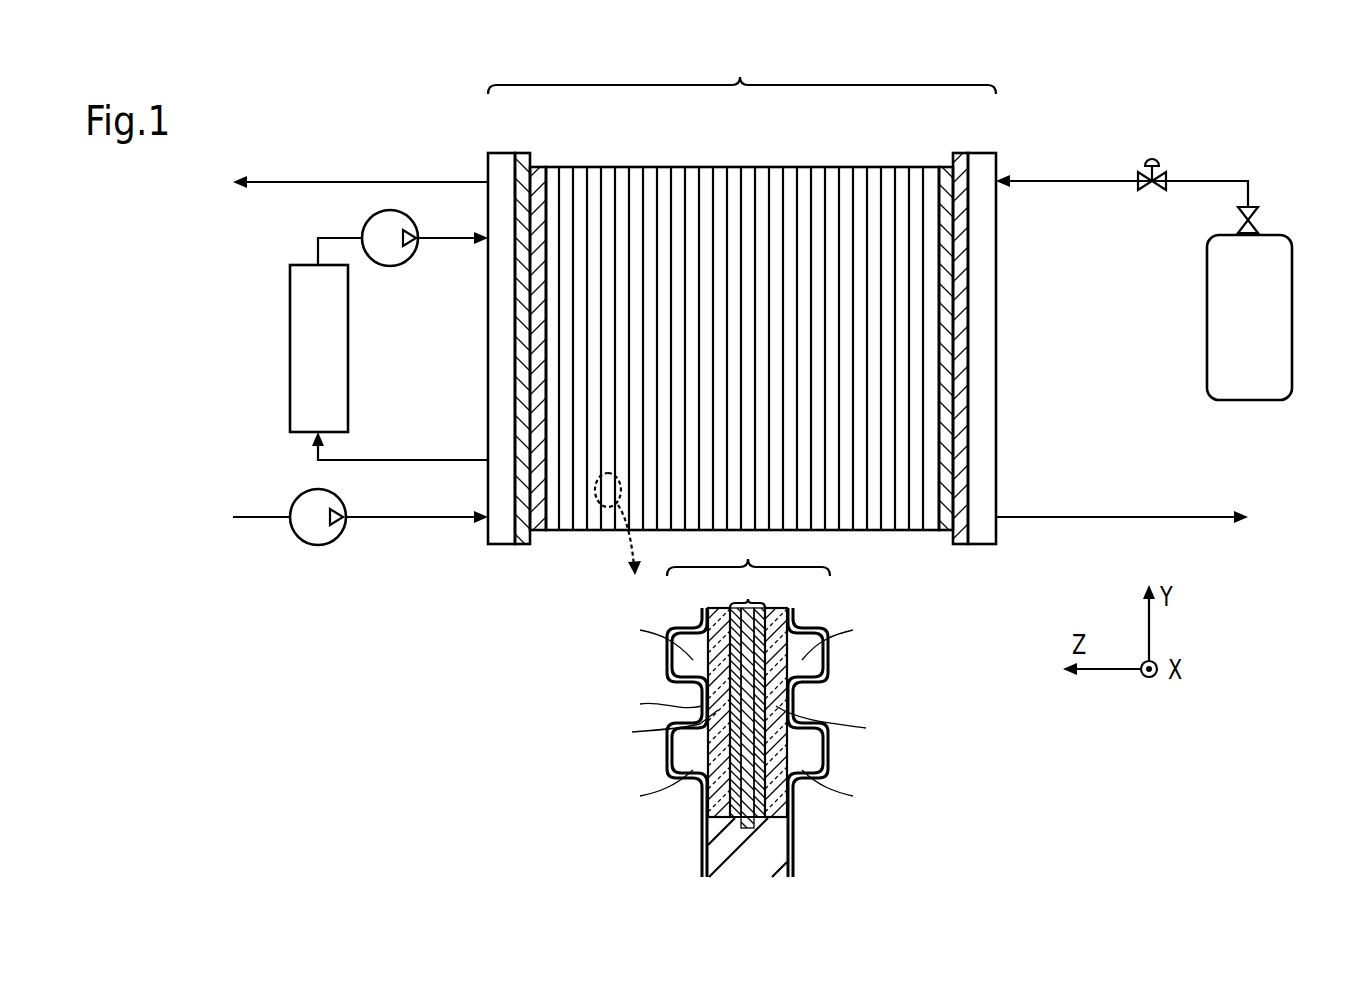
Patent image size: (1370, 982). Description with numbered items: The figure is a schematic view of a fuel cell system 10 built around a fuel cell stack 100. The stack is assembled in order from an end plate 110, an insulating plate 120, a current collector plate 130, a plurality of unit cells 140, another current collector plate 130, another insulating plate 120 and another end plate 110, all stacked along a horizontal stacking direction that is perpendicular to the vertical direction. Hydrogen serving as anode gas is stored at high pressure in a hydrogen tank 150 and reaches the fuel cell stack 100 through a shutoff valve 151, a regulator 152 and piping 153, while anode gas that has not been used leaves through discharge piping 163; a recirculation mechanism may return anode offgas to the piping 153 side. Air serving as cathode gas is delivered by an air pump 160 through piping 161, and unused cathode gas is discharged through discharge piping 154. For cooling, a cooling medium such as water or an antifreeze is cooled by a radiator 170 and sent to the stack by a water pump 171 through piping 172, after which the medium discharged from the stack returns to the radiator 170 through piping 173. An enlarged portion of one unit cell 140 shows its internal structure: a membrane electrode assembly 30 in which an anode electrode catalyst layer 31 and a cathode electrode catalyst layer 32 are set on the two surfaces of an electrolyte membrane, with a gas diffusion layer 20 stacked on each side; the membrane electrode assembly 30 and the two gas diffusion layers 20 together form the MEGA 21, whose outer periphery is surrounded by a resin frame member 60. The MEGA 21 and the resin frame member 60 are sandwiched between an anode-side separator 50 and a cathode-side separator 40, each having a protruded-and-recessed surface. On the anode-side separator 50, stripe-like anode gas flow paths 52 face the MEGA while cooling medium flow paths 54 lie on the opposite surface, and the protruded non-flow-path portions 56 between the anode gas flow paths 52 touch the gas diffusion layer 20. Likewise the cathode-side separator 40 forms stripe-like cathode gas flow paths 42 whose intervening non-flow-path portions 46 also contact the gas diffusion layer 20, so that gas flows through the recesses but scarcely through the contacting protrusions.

The fuel cell system 10 is at (342, 92).
The fuel cell stack 100 is at (744, 291).
The end plate 110 is at (505, 153).
The insulating plate 120 is at (522, 153).
The current collector plate 130 is at (538, 167).
The fuel-cell unit cell 140 is at (748, 167).
The hydrogen tank 150 is at (1292, 301).
The shutoff valve 151 is at (1255, 220).
The regulator 152 is at (1153, 190).
The piping 153 is at (1110, 181).
The discharge piping 154 is at (395, 182).
The air pump 160 is at (318, 546).
The piping 161 is at (415, 517).
The discharge piping 163 is at (1195, 517).
The radiator 170 is at (290, 344).
The water pump 171 is at (390, 266).
The piping 172 is at (445, 238).
The piping 173 is at (390, 460).
The gas diffusion layer 20 is at (718, 607).
The membrane electrode assembly 30 is at (748, 676).
The anode electrode catalyst layer 31 is at (733, 606).
The Membrane-Electrode-and-Gas-diffusion-layer Assembly (MEGA) 21 is at (750, 676).
The cathode electrode catalyst layer 32 is at (762, 606).
The cathode-side separator 40 is at (795, 865).
The cathode gas flow path 42 is at (841, 707).
The protruded portion (non-flow-path portion) 46 is at (835, 724).
The anode-side separator 50 is at (701, 864).
The anode gas flow path 52 is at (654, 707).
The cooling medium flow path 54 is at (657, 701).
The protruded portion (non-flow-path portion) 56 is at (661, 730).
The resin frame member 60 is at (768, 846).